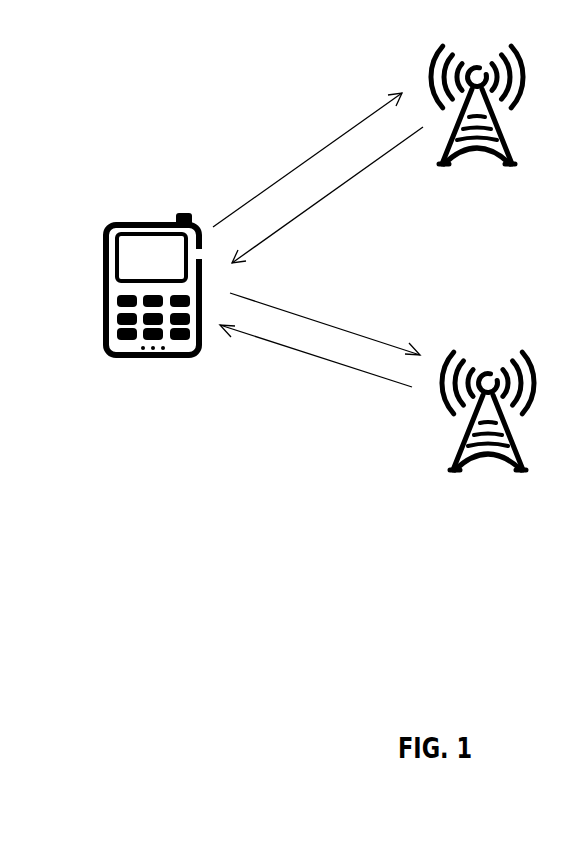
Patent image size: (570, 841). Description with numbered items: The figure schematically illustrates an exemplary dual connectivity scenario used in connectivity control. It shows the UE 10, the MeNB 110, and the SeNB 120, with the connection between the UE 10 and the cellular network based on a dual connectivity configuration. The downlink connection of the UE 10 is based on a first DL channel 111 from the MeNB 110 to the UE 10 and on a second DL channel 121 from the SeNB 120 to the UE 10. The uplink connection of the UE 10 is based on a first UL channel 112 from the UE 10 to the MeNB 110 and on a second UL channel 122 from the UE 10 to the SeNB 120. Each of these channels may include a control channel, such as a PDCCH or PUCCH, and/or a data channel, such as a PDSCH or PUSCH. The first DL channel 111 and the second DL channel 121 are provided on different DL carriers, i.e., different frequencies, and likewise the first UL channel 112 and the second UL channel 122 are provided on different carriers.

The UE 10 is at (138, 358).
The MeNB 110 is at (498, 165).
The SeNB 120 is at (512, 470).
The first DL channel 111 is at (338, 188).
The first UL channel 112 is at (323, 148).
The second DL channel 121 is at (320, 357).
The second UL channel 122 is at (340, 329).